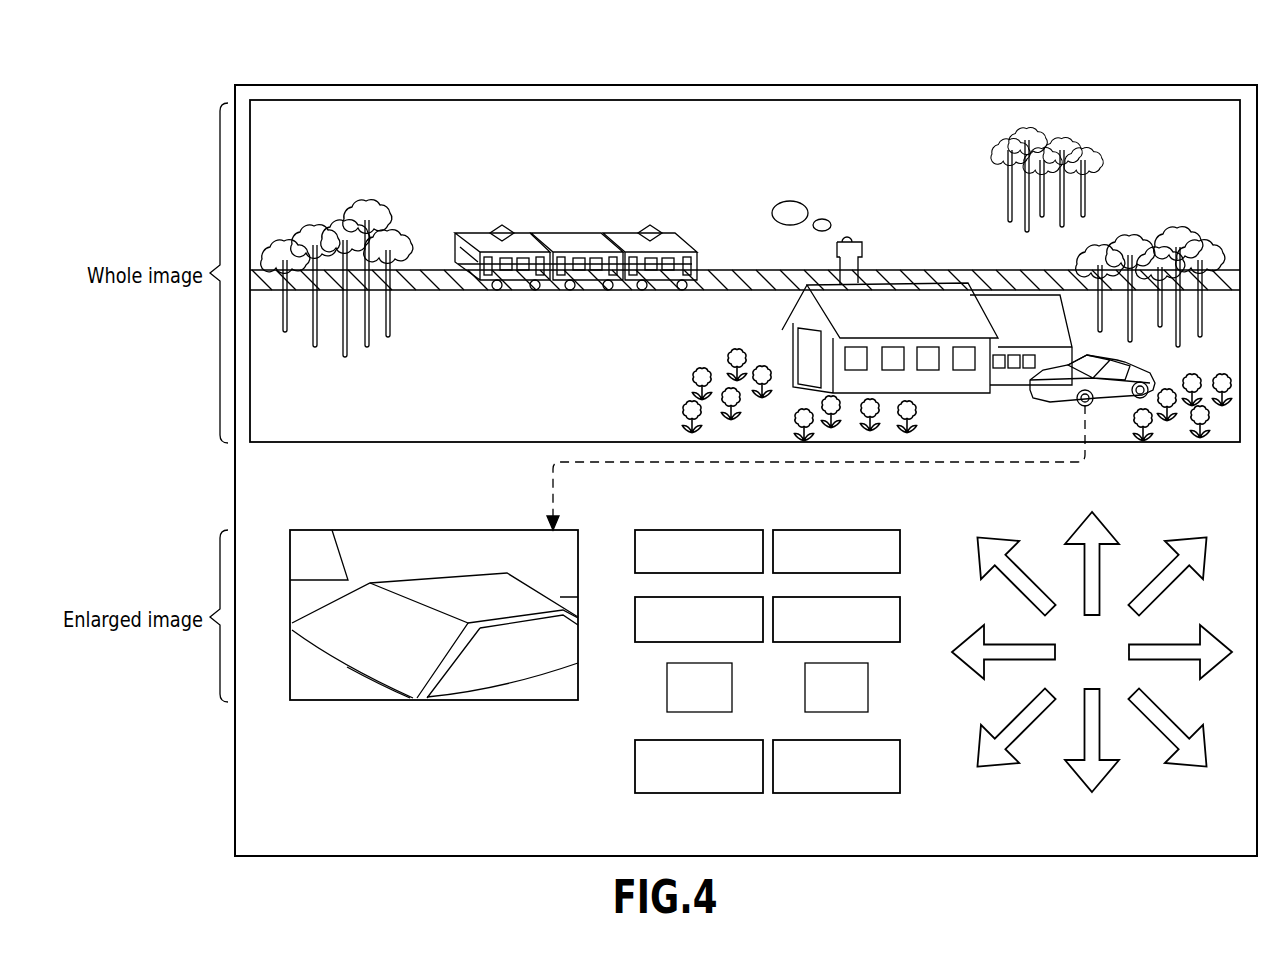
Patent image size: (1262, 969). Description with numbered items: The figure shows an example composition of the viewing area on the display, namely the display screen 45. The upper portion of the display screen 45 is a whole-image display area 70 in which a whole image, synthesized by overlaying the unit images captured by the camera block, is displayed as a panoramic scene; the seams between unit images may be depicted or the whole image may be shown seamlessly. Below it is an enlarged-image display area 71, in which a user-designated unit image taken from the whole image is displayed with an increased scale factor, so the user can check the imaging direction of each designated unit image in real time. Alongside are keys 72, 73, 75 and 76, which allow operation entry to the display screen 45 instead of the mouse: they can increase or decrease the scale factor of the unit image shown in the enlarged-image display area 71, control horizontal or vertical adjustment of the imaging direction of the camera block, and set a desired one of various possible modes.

The display screen 45 is at (753, 82).
The whole-image display area 70 is at (460, 443).
The enlarged-image display area 71 is at (450, 701).
The key 72 is at (677, 794).
The key 73 is at (826, 794).
The key 75 is at (957, 795).
The key 76 is at (635, 518).